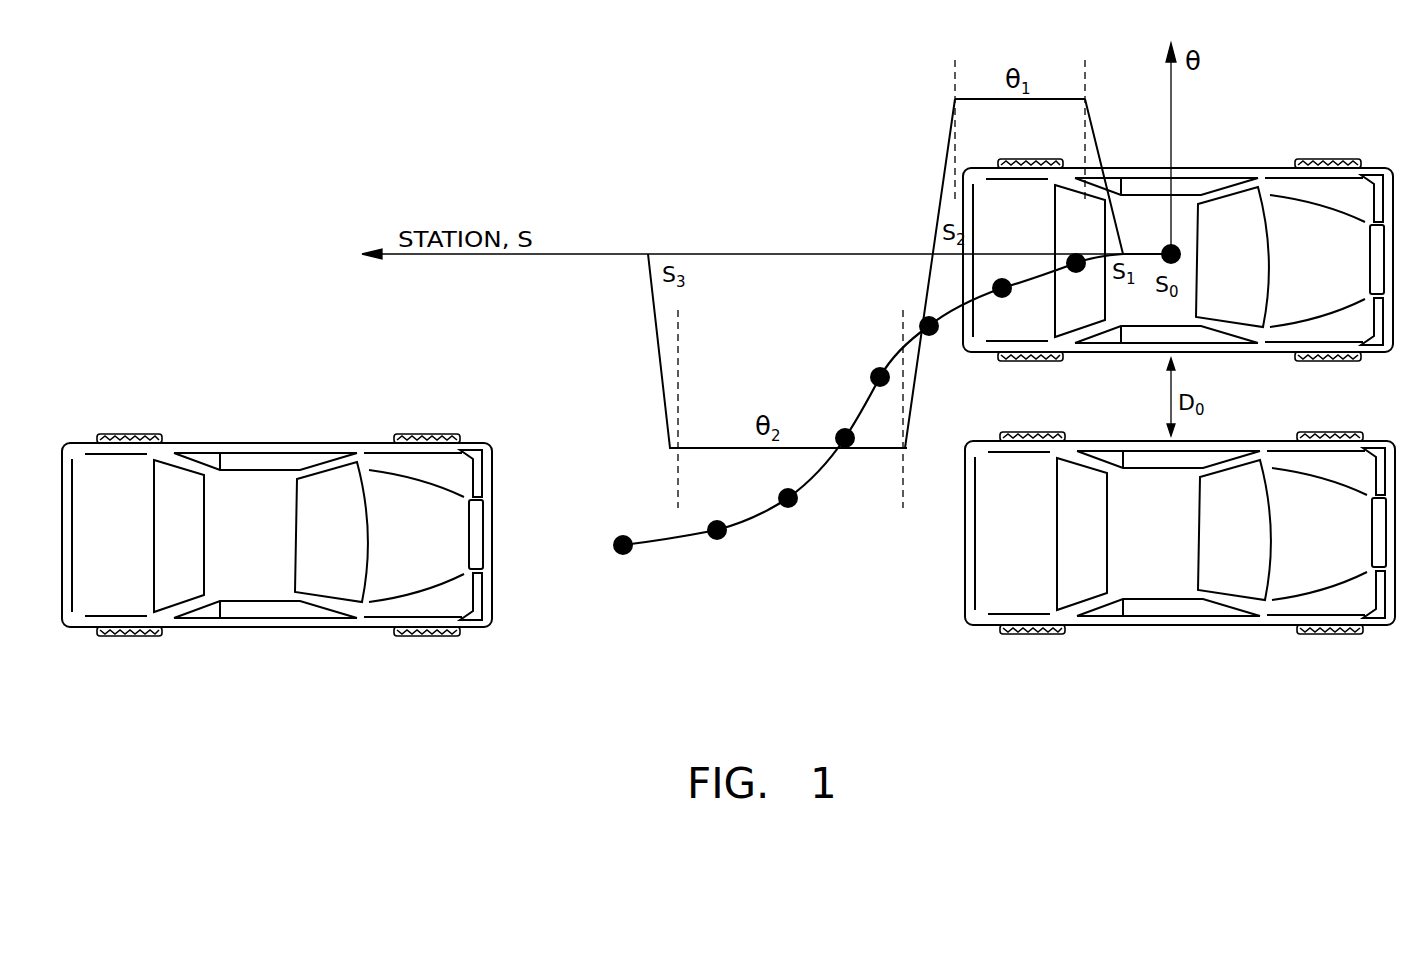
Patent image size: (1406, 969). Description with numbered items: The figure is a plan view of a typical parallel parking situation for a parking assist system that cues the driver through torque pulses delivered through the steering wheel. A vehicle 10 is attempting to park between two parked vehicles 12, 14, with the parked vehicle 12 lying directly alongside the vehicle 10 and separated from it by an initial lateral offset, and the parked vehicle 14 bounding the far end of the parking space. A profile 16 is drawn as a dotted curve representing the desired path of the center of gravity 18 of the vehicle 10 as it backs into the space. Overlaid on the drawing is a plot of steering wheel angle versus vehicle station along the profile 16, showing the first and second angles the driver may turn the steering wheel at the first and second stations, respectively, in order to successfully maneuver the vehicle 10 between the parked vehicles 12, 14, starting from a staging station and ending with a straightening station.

The vehicle 10 is at (1347, 185).
The parked vehicle 12 is at (1355, 615).
The parked vehicle 14 is at (178, 448).
The profile 16 is at (758, 518).
The center of gravity 18 is at (623, 545).